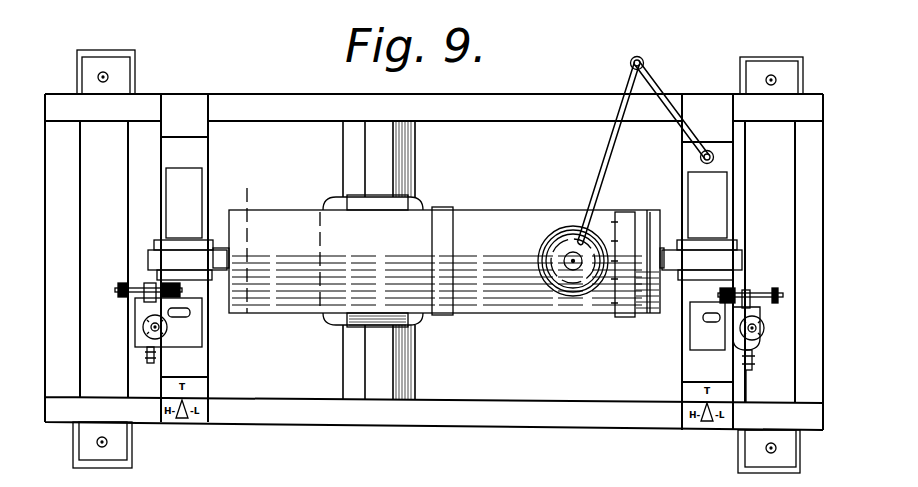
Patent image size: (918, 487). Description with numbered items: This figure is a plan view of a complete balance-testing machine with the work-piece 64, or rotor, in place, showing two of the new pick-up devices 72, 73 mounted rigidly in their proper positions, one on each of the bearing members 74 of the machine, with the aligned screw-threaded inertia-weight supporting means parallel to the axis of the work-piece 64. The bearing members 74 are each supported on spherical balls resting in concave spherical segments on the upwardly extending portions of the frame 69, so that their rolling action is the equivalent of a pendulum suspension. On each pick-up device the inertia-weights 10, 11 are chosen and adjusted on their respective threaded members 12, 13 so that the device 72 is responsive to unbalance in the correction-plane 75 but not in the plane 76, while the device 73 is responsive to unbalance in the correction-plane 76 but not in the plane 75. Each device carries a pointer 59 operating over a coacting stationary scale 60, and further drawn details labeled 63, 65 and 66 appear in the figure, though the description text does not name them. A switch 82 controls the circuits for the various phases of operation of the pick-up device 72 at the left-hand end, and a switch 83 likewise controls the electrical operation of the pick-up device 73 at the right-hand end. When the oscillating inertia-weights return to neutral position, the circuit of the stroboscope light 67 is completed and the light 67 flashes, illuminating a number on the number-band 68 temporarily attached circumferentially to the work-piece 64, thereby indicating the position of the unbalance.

The inertia-weight 10 is at (167, 284).
The inertia-weight 11 is at (122, 284).
The threaded member 12 is at (180, 293).
The threaded member 13 is at (749, 290).
The pointer 59 is at (147, 323).
The stationary scale 60 is at (165, 338).
The slot 63 is at (177, 315).
The work-piece 64 is at (287, 218).
The lower bearing 65 is at (437, 316).
The upper bearing 66 is at (430, 197).
The stroboscope light 67 is at (560, 229).
The number-band 68 is at (627, 317).
The frame 69 is at (112, 63).
The pick-up device 72 is at (143, 337).
The pick-up device 73 is at (752, 348).
The bearing member 74 is at (190, 175).
The correction-plane 75 is at (248, 190).
The correction-plane 76 is at (650, 207).
The switch 82 is at (178, 419).
The switch 83 is at (698, 423).